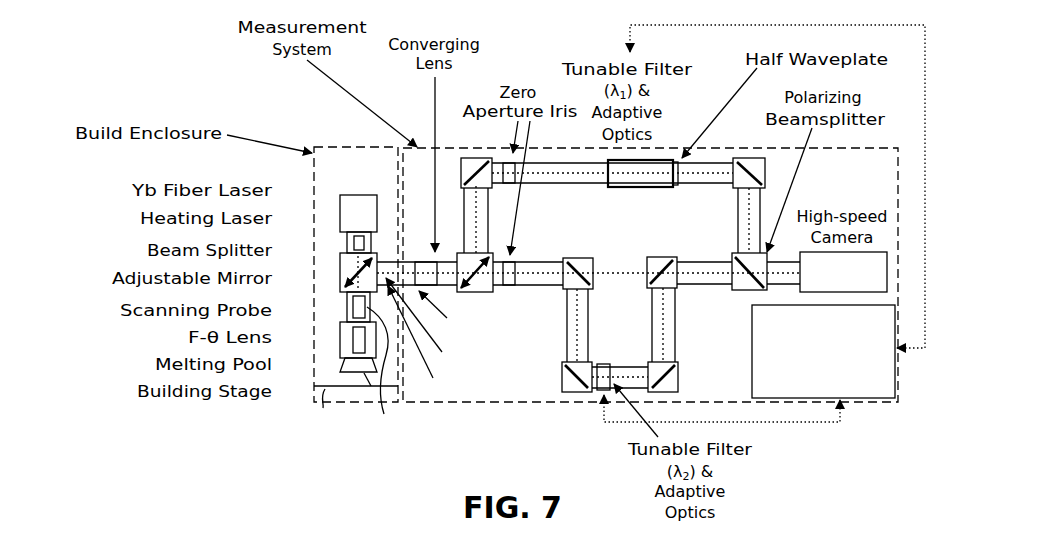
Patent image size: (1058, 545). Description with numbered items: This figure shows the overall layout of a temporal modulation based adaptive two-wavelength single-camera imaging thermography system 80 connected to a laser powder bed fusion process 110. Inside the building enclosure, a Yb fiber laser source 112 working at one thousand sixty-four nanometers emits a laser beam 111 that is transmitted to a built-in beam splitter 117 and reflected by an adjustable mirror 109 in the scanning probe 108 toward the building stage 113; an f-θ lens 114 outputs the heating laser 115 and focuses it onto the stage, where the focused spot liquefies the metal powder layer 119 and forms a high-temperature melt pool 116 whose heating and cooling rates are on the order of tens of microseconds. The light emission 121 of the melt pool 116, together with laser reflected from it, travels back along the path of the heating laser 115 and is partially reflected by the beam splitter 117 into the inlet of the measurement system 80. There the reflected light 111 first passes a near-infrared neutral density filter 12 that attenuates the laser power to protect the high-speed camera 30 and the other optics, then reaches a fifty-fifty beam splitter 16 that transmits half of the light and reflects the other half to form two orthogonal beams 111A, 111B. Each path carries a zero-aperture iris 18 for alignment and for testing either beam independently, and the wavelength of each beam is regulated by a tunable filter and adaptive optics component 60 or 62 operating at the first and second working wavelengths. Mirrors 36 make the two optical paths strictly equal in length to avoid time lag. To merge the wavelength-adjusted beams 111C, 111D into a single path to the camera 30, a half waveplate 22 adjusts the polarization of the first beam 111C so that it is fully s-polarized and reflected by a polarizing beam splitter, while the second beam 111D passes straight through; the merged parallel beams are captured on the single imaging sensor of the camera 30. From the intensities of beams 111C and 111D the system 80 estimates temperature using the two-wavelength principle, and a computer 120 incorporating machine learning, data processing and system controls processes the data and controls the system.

The near-infrared neutral density filter 12 is at (473, 339).
The beam splitter 16 is at (472, 290).
The zero-aperture iris 18 is at (508, 187).
The half waveplate 22 is at (678, 188).
The high-speed camera 30 is at (887, 268).
The mirrors 36 is at (472, 157).
The tunable filter and adaptive optics component 60 is at (605, 186).
The tunable filter and adaptive optics component 62 is at (602, 363).
The ATSIT measurement system 80 is at (416, 146).
The scanning probe 108 is at (340, 347).
The adjustable mirror 109 is at (347, 335).
The laser powder bed fusion process 110 is at (313, 177).
The laser beam / reflected light 111 is at (387, 270).
The laser beam segment 111A is at (556, 173).
The laser beam segment 111B is at (580, 307).
The first wavelength-adjusted beam 111C is at (655, 174).
The second wavelength-adjusted beam 111D is at (696, 265).
The Yb fiber laser source 112 is at (338, 207).
The building stage 113 is at (313, 388).
The f-θ lens 114 is at (340, 362).
The heating laser 115 is at (346, 242).
The melt pool 116 is at (352, 380).
The beam splitter 117 is at (340, 273).
The metal powder layer 119 is at (323, 408).
The computer 120 is at (895, 373).
The light emission 121 is at (389, 372).